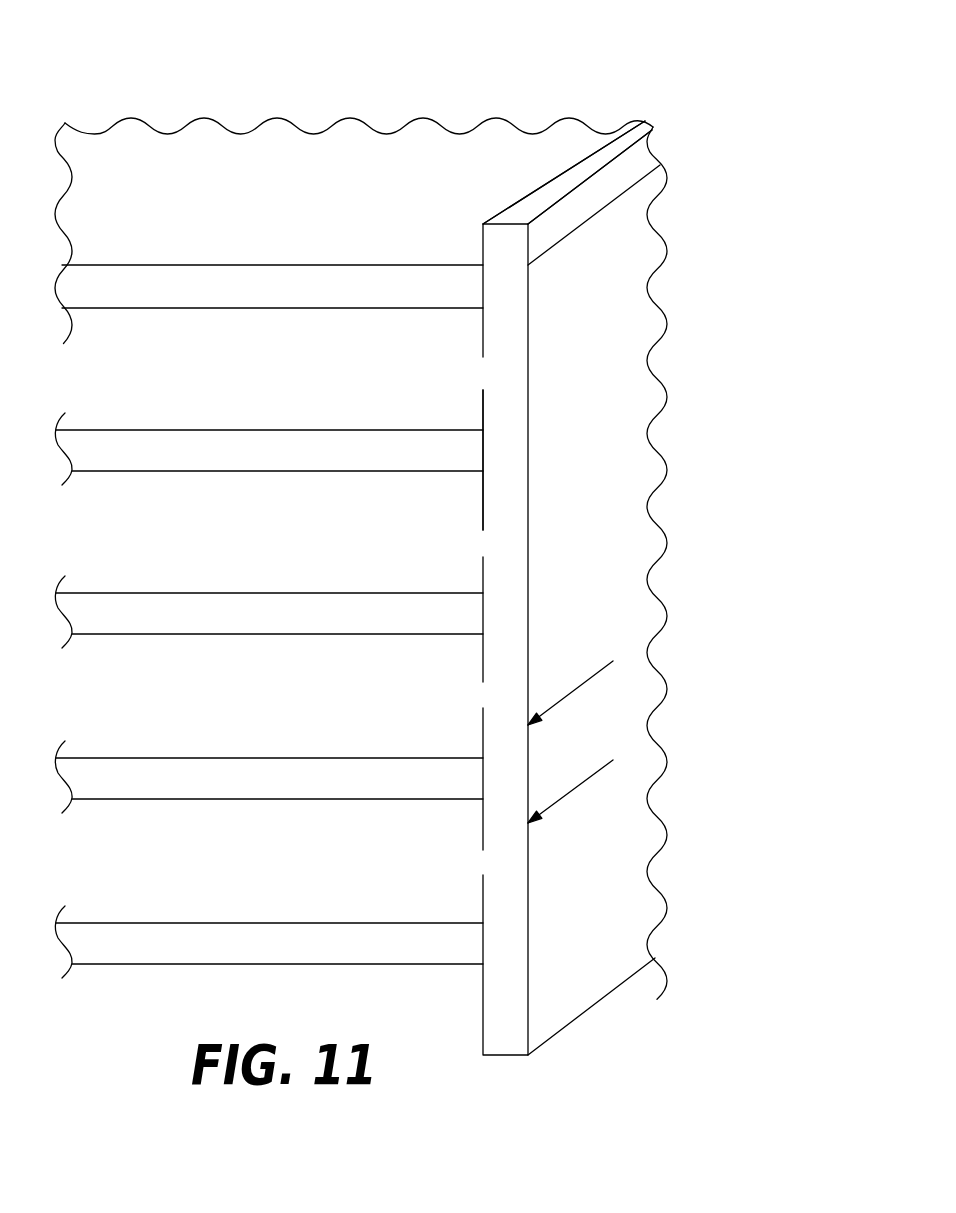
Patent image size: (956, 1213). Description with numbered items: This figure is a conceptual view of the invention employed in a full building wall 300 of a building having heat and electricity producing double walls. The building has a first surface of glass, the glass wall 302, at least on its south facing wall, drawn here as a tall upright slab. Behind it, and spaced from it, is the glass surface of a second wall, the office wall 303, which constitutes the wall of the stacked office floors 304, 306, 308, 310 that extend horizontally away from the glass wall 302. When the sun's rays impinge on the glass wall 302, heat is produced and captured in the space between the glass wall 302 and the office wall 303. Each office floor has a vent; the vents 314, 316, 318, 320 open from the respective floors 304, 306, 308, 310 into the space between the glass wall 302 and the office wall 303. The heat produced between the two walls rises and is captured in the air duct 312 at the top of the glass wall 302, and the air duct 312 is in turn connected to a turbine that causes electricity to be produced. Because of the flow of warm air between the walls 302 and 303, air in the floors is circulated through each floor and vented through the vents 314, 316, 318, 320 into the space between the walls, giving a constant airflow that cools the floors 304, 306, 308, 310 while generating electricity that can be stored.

The layered structure 300 is at (335, 84).
The glass wall 302 is at (531, 492).
The office wall 303 is at (483, 405).
The office floor 304 is at (226, 870).
The office floor 306 is at (226, 715).
The office floor 308 is at (226, 545).
The office floor 310 is at (226, 392).
The air duct 312 is at (640, 153).
The vent 314 is at (482, 375).
The vent 316 is at (482, 543).
The vent 318 is at (482, 695).
The vent 320 is at (482, 863).